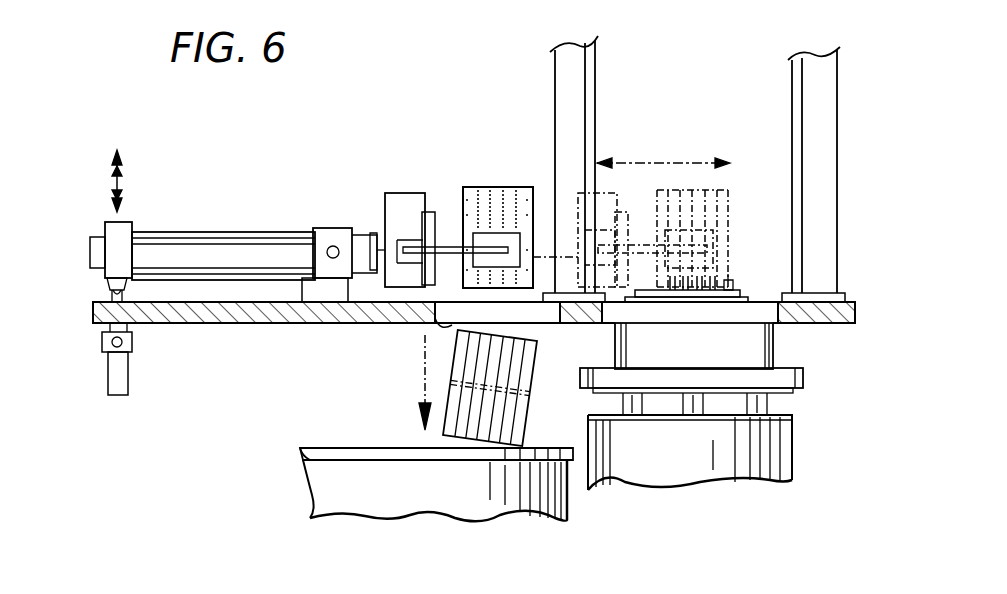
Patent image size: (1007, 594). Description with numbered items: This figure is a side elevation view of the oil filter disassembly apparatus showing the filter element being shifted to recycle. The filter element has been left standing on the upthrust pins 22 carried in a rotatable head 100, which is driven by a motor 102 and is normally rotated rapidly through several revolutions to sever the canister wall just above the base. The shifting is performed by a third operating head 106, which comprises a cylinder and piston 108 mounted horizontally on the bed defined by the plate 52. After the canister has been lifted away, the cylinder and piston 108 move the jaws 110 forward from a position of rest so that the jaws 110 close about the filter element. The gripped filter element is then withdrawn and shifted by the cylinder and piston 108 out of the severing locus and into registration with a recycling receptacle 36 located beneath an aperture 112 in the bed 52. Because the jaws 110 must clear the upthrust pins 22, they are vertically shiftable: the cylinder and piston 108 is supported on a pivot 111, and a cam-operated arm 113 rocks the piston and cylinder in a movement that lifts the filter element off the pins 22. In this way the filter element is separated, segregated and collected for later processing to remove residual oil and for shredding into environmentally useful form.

The pins 22 is at (732, 284).
The recycling receptacle 36 is at (393, 490).
The plate 52 is at (255, 326).
The rotatable head 100 is at (750, 347).
The motor 102 is at (758, 446).
The third operating head 106 is at (252, 192).
The cylinder and piston 108 is at (220, 245).
The jaws 110 is at (492, 238).
The pivot 111 is at (333, 246).
The aperture 112 is at (445, 323).
The cam-operated arm 113 is at (91, 292).